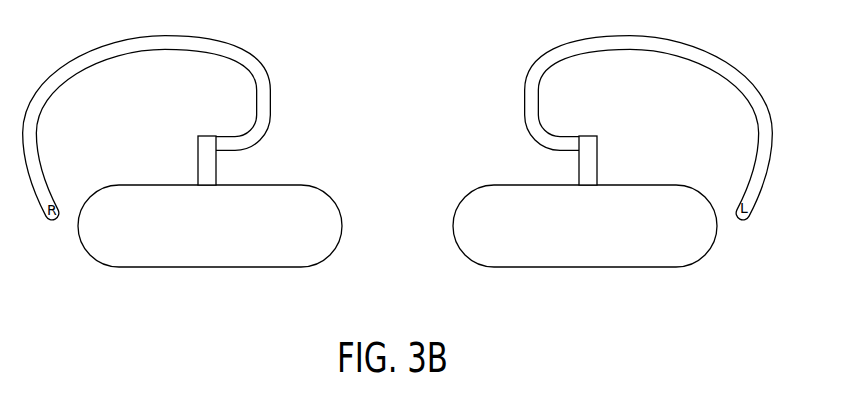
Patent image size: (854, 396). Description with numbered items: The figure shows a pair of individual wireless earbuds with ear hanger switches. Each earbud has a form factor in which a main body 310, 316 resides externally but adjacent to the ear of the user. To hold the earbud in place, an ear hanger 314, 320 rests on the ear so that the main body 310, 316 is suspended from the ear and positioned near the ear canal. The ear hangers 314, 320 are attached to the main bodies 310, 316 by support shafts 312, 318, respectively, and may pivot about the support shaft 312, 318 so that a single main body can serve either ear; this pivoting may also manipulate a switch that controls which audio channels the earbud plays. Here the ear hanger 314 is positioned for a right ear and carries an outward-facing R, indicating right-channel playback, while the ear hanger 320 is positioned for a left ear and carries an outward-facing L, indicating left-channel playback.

The main body 310 is at (155, 267).
The support shaft 312 is at (216, 168).
The ear hanger 314 is at (272, 90).
The main body 316 is at (552, 267).
The support shaft 318 is at (597, 170).
The ear hanger 320 is at (765, 88).